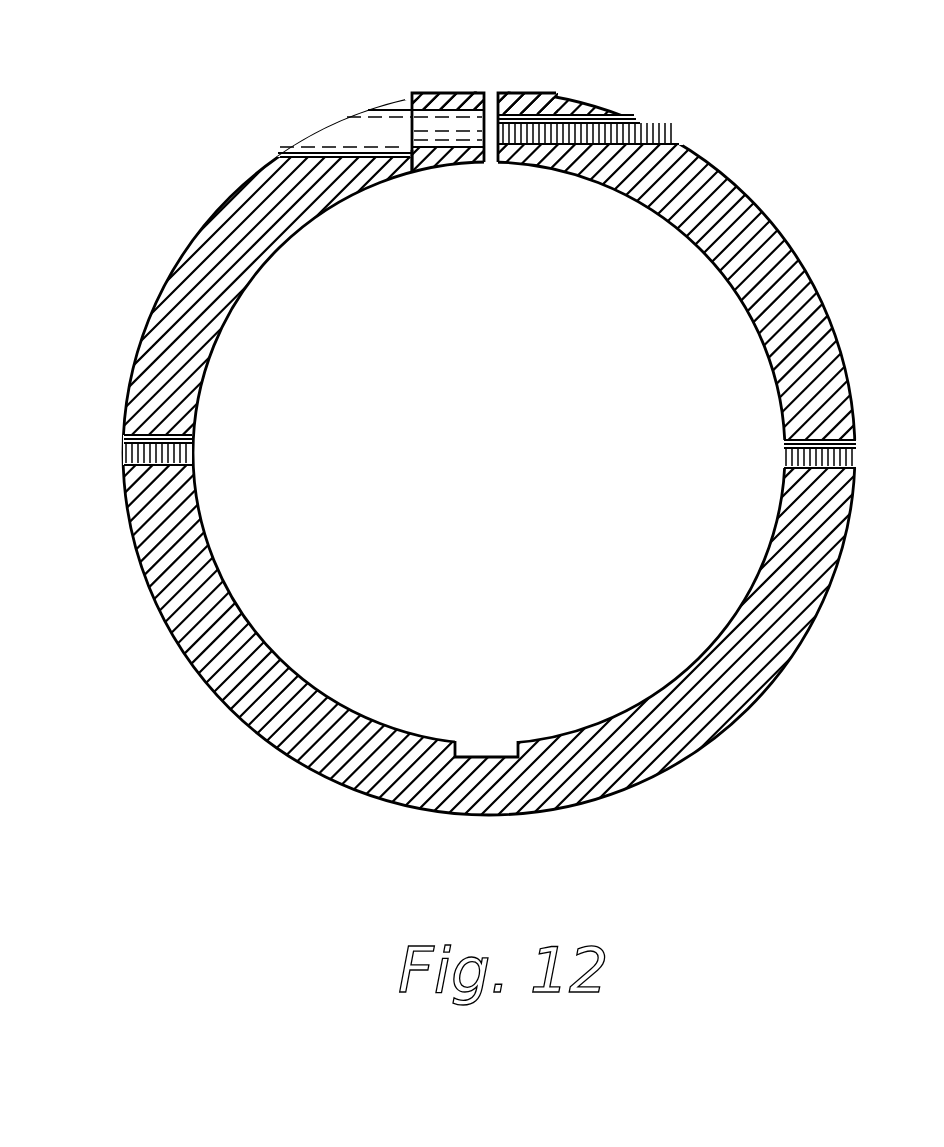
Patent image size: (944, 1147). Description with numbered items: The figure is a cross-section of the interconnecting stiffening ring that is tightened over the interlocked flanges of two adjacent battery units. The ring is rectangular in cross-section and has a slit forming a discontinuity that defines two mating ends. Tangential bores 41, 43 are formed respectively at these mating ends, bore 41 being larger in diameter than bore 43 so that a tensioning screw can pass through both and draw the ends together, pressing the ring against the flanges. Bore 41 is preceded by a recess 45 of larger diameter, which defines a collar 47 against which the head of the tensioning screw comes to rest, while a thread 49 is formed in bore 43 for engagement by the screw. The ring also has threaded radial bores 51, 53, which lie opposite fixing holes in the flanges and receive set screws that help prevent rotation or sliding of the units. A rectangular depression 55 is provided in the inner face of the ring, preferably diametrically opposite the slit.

The tangential bore 41 is at (459, 112).
The tangential bore 43 is at (556, 150).
The recess 45 is at (354, 135).
The collar 47 is at (402, 170).
The thread 49 is at (637, 132).
The threaded radial bore 51 is at (122, 452).
The threaded radial bore 53 is at (785, 455).
The rectangular depression 55 is at (472, 742).